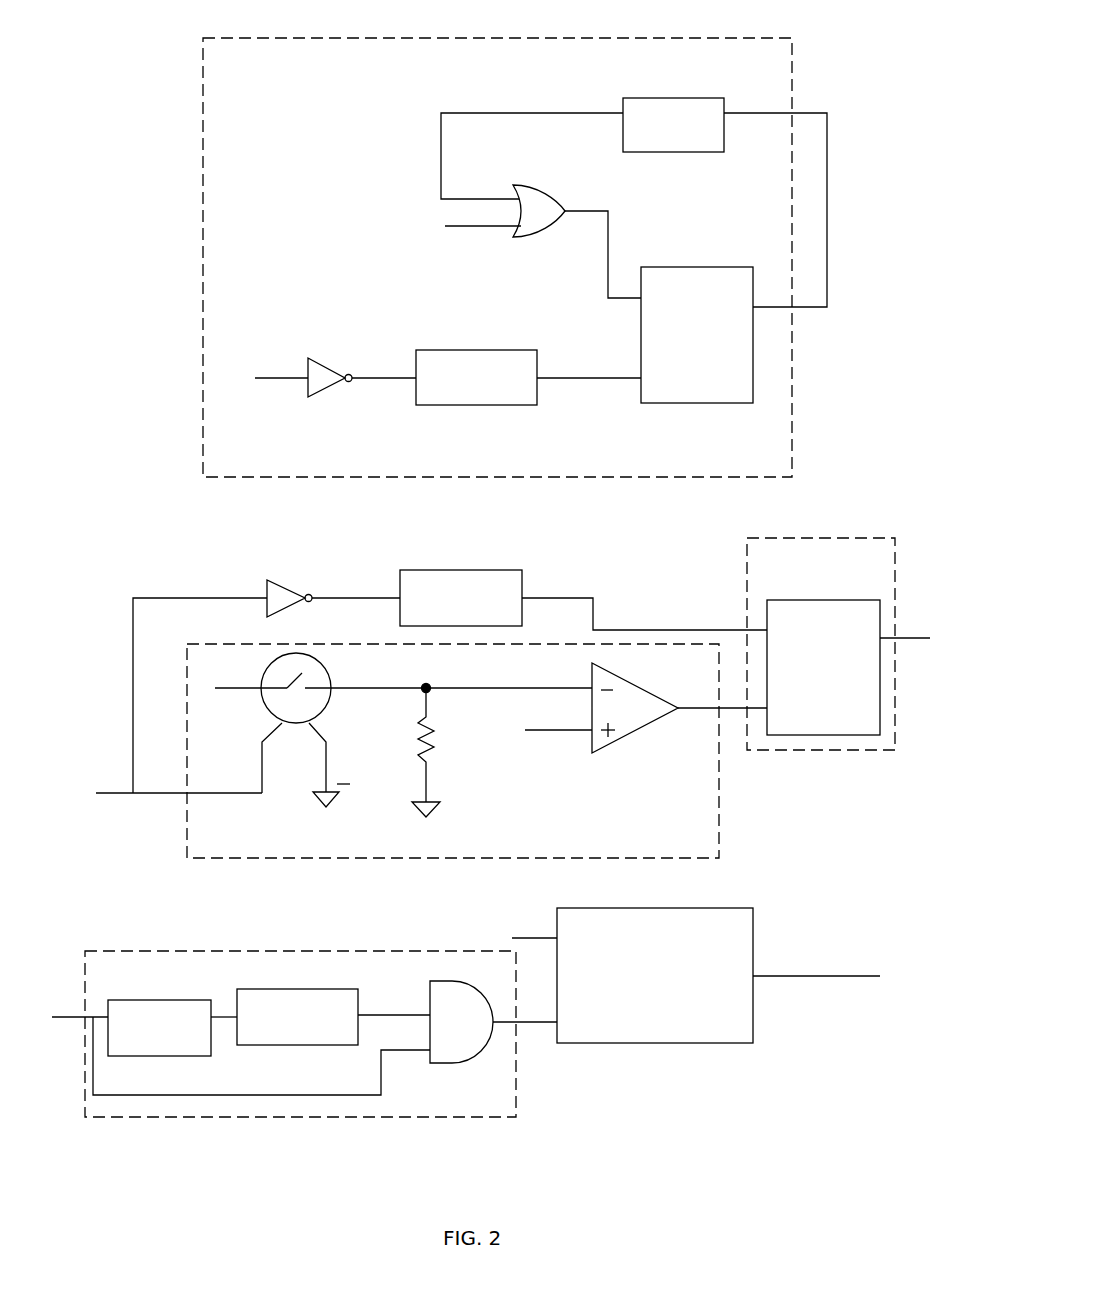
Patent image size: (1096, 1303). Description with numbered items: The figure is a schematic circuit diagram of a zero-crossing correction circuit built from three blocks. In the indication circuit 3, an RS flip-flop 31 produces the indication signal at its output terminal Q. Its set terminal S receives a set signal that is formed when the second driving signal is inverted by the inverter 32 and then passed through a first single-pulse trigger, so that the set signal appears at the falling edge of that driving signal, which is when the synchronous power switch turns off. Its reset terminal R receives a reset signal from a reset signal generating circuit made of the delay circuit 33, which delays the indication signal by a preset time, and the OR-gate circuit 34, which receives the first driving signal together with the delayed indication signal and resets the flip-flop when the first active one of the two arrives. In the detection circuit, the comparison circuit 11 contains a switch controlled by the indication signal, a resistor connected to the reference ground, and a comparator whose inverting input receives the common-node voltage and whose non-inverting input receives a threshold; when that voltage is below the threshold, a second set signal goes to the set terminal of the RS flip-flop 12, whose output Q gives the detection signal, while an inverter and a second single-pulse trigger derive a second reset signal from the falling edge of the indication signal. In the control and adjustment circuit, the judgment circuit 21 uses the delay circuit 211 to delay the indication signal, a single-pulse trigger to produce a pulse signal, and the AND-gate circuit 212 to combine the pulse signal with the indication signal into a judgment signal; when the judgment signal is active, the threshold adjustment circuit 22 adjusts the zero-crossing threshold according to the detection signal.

The indication circuit 3 is at (285, 47).
The delay circuit 33 is at (687, 98).
The OR-gate circuit 34 is at (557, 185).
The RS flip-flop 31 is at (707, 267).
The inverter 32 is at (328, 368).
The RS flip-flop 12 is at (292, 597).
The comparison circuit 11 is at (719, 813).
The judgment circuit 21 is at (438, 1117).
The delay circuit 211 is at (142, 1000).
The AND-gate circuit 212 is at (455, 981).
The threshold adjustment circuit 22 is at (713, 1043).